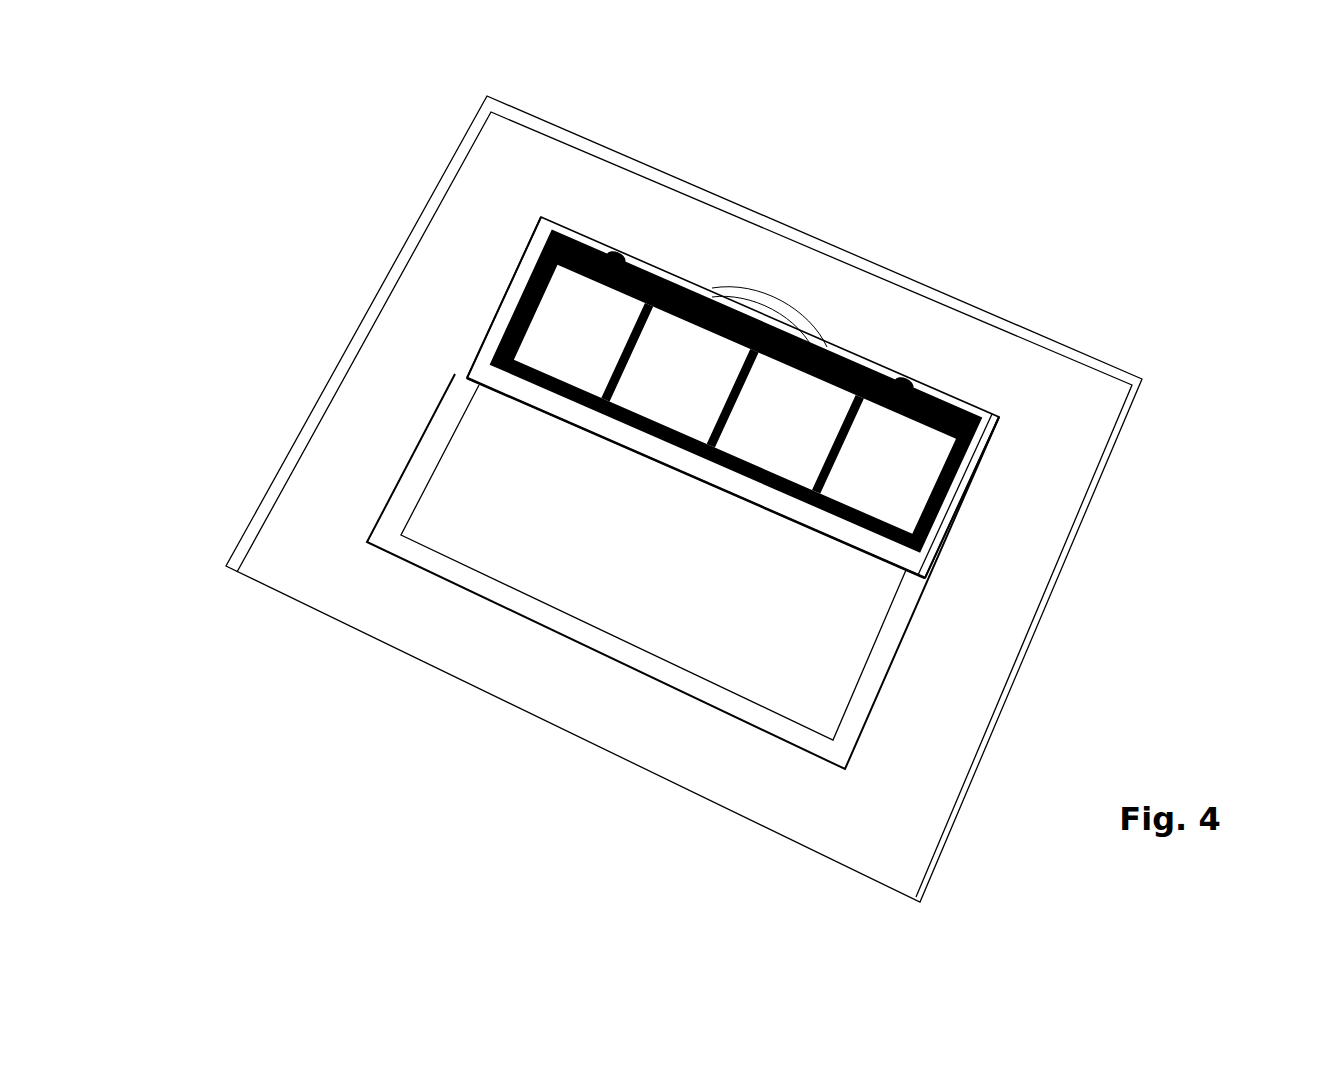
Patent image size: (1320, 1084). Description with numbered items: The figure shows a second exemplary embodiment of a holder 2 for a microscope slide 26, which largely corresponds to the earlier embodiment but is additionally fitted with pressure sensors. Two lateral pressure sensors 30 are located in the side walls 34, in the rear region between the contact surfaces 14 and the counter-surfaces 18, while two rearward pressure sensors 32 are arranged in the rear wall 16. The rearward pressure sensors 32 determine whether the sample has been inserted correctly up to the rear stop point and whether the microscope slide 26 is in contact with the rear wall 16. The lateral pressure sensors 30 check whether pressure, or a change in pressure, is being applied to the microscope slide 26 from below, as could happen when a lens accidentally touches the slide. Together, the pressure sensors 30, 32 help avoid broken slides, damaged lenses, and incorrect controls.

The holder 2 is at (1005, 230).
The contact surfaces 14 is at (415, 483).
The rear wall 16 is at (700, 280).
The counter-surfaces 18 is at (480, 338).
The microscope slide 26 is at (707, 477).
The lateral pressure sensors 30 is at (515, 287).
The rearward pressure sensors 32 is at (620, 256).
The side walls 34 is at (435, 433).